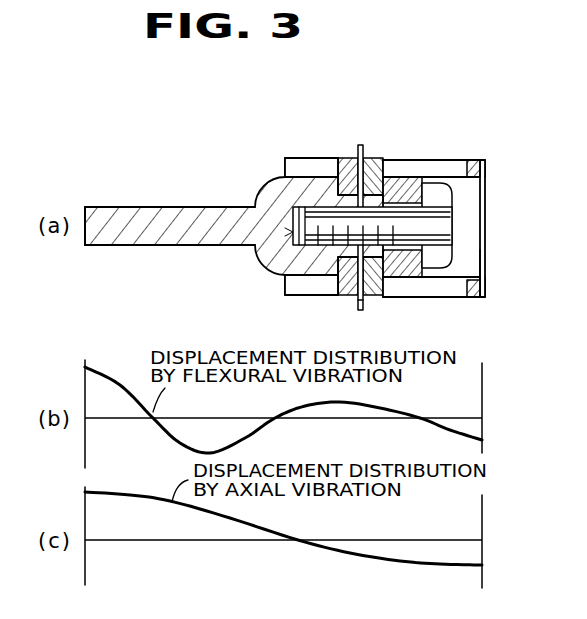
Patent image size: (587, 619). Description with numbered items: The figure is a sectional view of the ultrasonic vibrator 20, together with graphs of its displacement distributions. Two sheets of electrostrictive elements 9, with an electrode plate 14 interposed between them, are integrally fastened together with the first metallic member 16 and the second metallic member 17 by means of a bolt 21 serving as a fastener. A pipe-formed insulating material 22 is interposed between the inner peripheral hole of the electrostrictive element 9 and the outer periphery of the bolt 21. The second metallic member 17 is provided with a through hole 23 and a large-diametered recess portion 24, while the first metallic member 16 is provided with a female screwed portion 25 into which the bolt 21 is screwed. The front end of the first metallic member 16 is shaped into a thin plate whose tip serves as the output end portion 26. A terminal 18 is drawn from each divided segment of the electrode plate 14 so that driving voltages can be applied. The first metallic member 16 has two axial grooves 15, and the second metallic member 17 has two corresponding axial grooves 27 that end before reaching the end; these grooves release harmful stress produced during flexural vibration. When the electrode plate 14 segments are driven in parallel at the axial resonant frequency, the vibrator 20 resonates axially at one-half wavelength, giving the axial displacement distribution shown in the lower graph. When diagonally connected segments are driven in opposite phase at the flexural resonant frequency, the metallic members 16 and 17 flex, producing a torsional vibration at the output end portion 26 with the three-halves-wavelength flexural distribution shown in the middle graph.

The electrostrictive element 9 is at (346, 160).
The electrode plate 14 is at (361, 145).
The grooves 15 is at (300, 165).
The first metallic member 16 is at (160, 213).
The second metallic member 17 is at (473, 193).
The terminal 18 is at (363, 305).
The ultrasonic vibrator 20 is at (226, 208).
The bolt 21 is at (447, 223).
The pipe-formed insulating material 22 is at (406, 285).
The through hole 23 is at (458, 290).
The large-diametered recess portion 24 is at (478, 270).
The female screwed portion 25 is at (284, 233).
The output end portion 26 is at (85, 207).
The grooves 27 is at (430, 165).